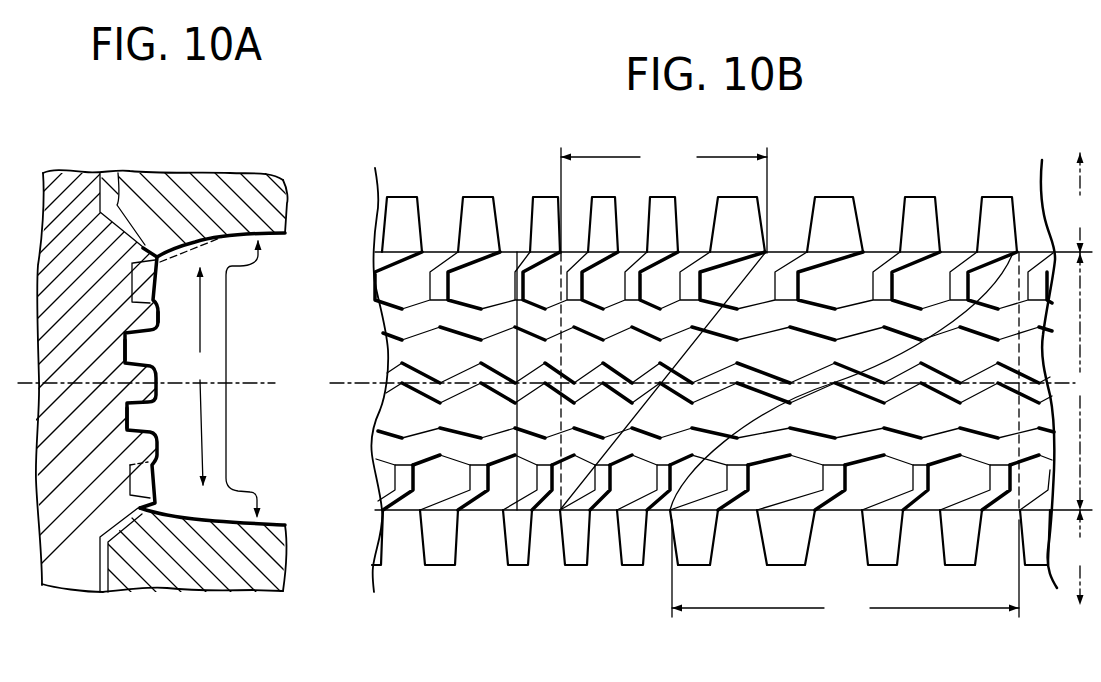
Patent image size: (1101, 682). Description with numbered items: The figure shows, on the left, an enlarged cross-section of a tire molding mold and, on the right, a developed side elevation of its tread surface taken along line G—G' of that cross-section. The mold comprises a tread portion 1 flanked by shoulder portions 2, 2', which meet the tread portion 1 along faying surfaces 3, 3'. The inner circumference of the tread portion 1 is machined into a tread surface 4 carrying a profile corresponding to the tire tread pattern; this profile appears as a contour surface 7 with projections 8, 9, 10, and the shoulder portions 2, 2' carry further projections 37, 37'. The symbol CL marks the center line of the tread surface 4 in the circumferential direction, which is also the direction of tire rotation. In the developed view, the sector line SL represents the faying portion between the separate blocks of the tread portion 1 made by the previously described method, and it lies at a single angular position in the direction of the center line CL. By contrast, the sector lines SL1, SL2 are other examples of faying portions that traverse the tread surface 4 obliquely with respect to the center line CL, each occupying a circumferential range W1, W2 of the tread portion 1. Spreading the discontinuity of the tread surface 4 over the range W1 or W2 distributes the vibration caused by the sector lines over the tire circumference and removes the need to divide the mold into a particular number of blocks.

In FIG. 10A, the tread portion 1 is at (70, 156).
In FIG. 10A, the shoulder portion 2 is at (247, 209).
In FIG. 10B, the shoulder portion 2 is at (1080, 203).
In FIG. 10A, the faying surface 3 is at (125, 198).
In FIG. 10A, the projection 37 is at (214, 248).
In FIG. 10B, the projection 37 is at (699, 199).
In FIG. 10A, the contour surface 7 is at (155, 280).
In FIG. 10B, the contour surface 7 is at (377, 283).
In FIG. 10A, the projection 8 is at (157, 318).
In FIG. 10B, the projection 8 is at (380, 318).
In FIG. 10A, the projection 9 is at (152, 360).
In FIG. 10B, the projection 9 is at (388, 384).
In FIG. 10A, the projection 10 is at (145, 442).
In FIG. 10B, the projection 10 is at (377, 442).
In FIG. 10A, the tread surface 4 is at (196, 376).
In FIG. 10B, the tread surface 4 is at (1080, 381).
In FIG. 10A, the section line end G is at (253, 376).
In FIG. 10A, the section line end G' is at (270, 515).
In FIG. 10A, the center line CL is at (253, 380).
In FIG. 10B, the center line CL is at (317, 381).
In FIG. 10A, the projection 37' is at (212, 509).
In FIG. 10B, the projection 37' is at (711, 562).
In FIG. 10A, the faying surface 3' is at (121, 568).
In FIG. 10A, the shoulder portion 2' is at (189, 576).
In FIG. 10B, the shoulder portion 2' is at (1083, 557).
In FIG. 10B, the sector line SL is at (513, 252).
In FIG. 10B, the sector line SL1 is at (765, 262).
In FIG. 10B, the sector line SL2 is at (957, 318).
In FIG. 10B, the circumferential range W1 is at (664, 199).
In FIG. 10B, the circumferential range W2 is at (845, 571).